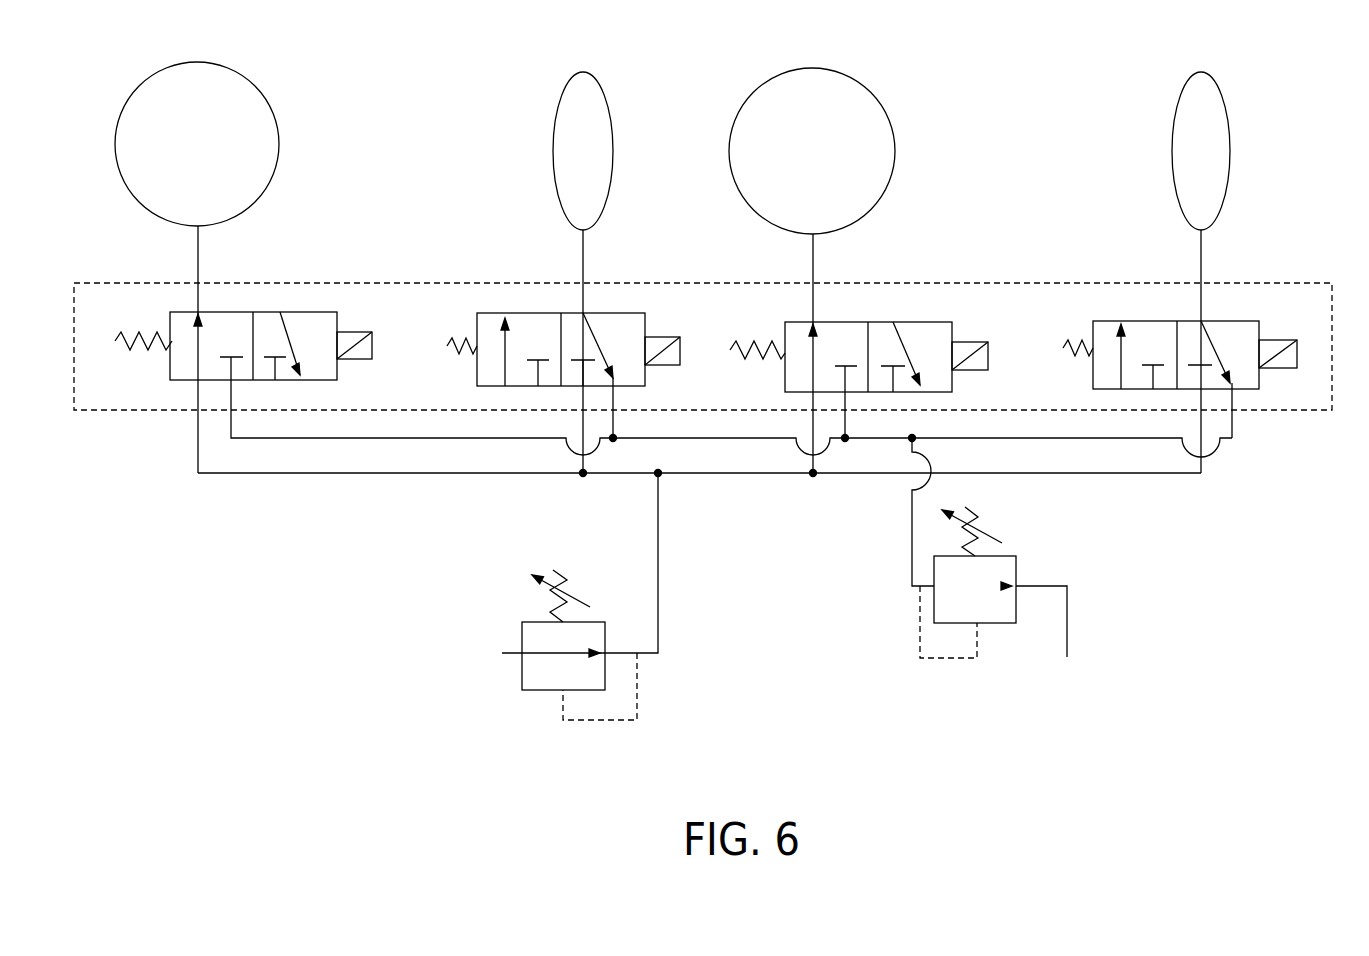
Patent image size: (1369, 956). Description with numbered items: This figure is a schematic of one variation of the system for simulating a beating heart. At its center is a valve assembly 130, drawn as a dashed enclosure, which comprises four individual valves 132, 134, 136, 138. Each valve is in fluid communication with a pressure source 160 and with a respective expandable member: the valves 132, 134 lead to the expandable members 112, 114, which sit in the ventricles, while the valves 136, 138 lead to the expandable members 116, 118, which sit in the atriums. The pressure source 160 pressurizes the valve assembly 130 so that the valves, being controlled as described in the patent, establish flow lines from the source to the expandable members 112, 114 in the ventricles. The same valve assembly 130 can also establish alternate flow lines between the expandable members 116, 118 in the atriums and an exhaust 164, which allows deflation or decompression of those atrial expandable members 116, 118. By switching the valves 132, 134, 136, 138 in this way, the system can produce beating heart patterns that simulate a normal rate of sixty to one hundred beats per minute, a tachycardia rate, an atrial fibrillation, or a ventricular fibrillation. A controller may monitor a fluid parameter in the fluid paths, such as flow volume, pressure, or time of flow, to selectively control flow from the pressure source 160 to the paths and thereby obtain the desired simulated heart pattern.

The expandable member 112 is at (212, 78).
The expandable member 114 is at (822, 78).
The expandable member 116 is at (583, 78).
The expandable member 118 is at (1203, 78).
The valve assembly 130 is at (128, 410).
The valve 132 is at (313, 315).
The valve 134 is at (930, 333).
The valve 136 is at (623, 313).
The valve 138 is at (1245, 333).
The pressure source 160 is at (540, 690).
The exhaust 164 is at (995, 623).